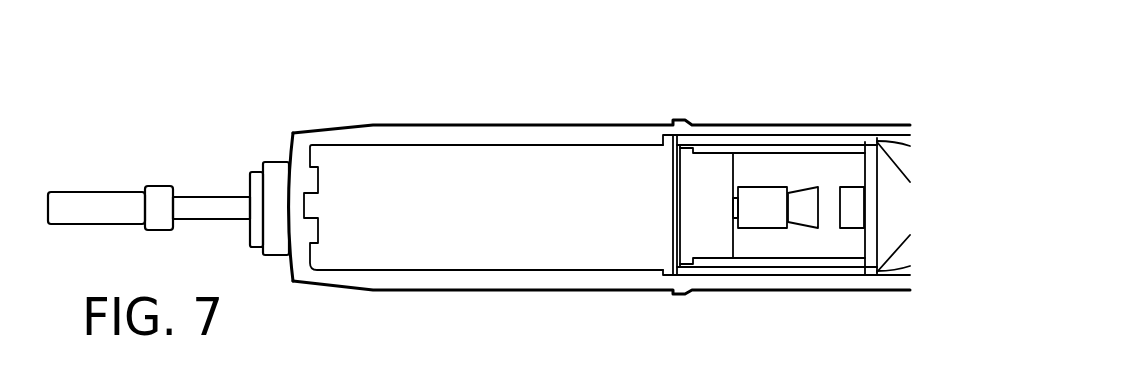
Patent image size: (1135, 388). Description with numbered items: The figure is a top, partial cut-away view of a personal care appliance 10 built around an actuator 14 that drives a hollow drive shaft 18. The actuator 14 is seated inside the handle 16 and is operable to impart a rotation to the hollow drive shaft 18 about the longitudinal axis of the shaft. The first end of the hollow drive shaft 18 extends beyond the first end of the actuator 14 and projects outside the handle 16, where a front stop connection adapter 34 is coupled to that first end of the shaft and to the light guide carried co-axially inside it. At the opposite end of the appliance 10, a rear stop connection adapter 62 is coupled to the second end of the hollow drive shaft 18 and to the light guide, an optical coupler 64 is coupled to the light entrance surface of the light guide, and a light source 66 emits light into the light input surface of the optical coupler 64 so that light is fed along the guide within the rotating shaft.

The personal care appliance 10 is at (252, 74).
The actuator 14 is at (431, 169).
The handle 16 is at (548, 126).
The hollow drive shaft 18 is at (215, 197).
The front stop connection adapter 34 is at (100, 195).
The rear stop connection adapter 62 is at (772, 222).
The optical coupler 64 is at (812, 190).
The light source 66 is at (852, 222).